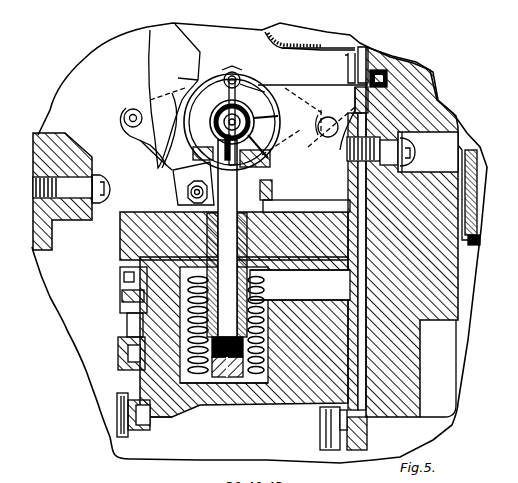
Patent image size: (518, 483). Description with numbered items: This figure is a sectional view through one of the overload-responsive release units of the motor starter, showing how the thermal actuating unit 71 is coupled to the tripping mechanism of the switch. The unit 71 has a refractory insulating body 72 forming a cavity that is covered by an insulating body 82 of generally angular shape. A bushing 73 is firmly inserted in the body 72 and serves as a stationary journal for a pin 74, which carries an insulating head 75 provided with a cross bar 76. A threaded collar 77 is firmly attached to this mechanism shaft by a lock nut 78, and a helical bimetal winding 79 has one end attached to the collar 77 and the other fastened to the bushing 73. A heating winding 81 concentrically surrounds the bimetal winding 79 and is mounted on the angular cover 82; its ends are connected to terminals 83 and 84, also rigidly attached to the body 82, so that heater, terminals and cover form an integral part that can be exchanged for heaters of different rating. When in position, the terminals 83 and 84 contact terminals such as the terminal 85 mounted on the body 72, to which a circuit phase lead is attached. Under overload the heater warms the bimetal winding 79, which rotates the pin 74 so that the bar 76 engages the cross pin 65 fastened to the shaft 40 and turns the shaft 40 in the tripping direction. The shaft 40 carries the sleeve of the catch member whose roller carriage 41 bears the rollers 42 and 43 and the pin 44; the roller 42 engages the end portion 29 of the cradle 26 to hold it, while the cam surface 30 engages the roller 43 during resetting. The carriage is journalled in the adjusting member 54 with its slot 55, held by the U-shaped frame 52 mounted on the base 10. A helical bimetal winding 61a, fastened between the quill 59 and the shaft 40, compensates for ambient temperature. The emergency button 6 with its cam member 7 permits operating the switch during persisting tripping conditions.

The emergency button 6 is at (33, 218).
The cam member 7 is at (66, 148).
The base 10 is at (412, 70).
The cradle 26 is at (166, 56).
The end portion of cradle 29 is at (166, 165).
The cam surface 30 is at (178, 78).
The shaft 40 is at (270, 152).
The roller carriage 41 is at (140, 140).
The roller 42 is at (128, 112).
The roller 43 is at (244, 76).
The pin 44 is at (325, 118).
The U-shaped frame 52 is at (326, 95).
The adjusting member 54 is at (225, 72).
The slot 55 is at (322, 128).
The quill 59 is at (244, 122).
The helical bimetal winding 61a is at (220, 120).
The cross pin 65 is at (262, 88).
The overload-responsive control unit 71 is at (312, 390).
The insulating body 72 is at (325, 217).
The bushing 73 is at (277, 217).
The pin 74 is at (165, 212).
The insulating head 75 is at (185, 175).
The cross bar 76 is at (218, 133).
The threaded collar 77 is at (250, 395).
The lock nut 78 is at (219, 380).
The helical bimetal winding 79 is at (125, 300).
The heating winding 81 is at (262, 320).
The insulating body 82 is at (172, 414).
The terminal 83 is at (128, 318).
The terminal 84 is at (120, 355).
The terminal 85 is at (118, 410).